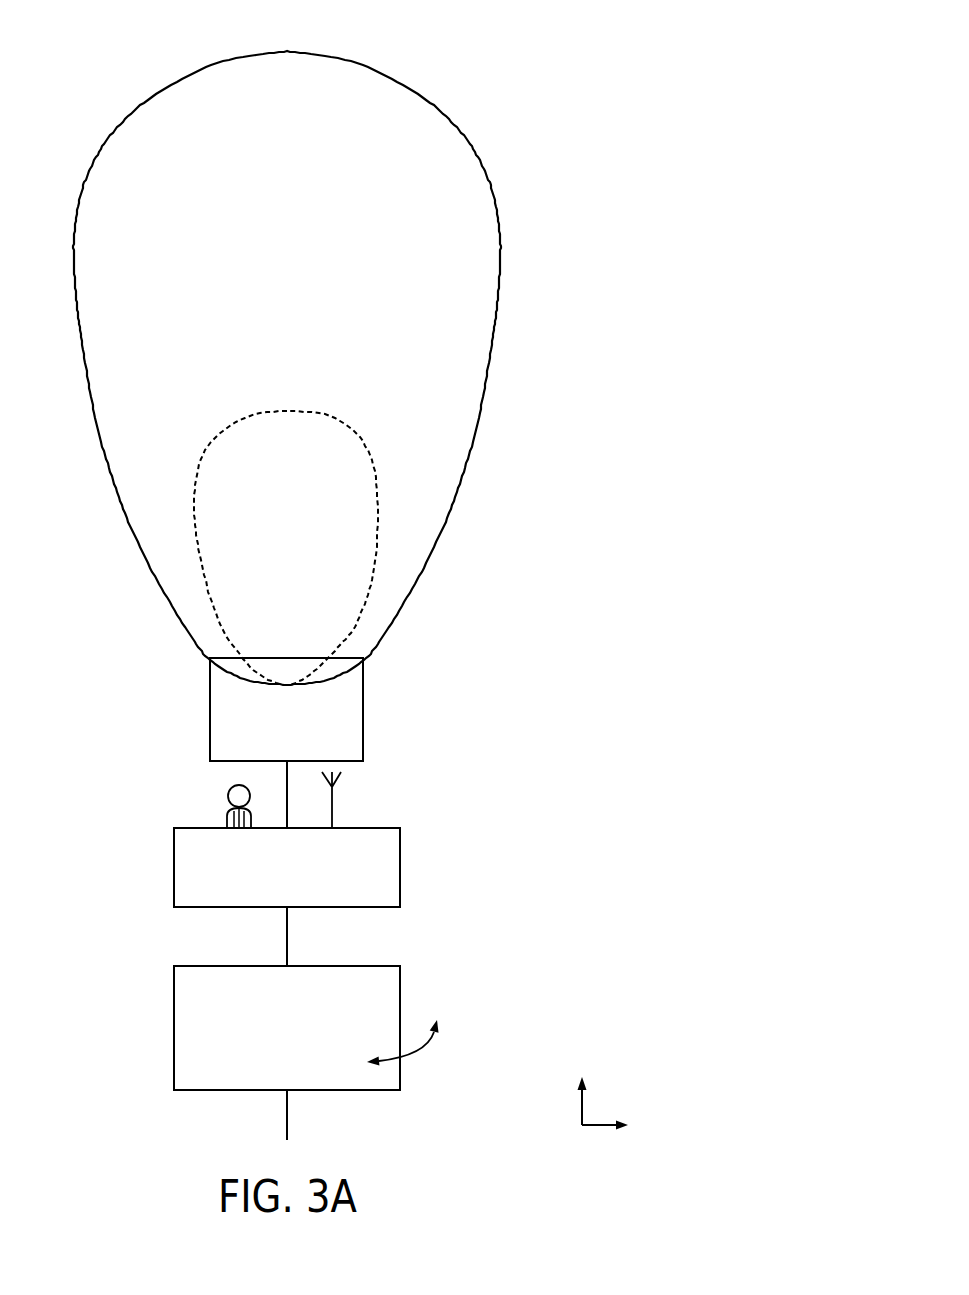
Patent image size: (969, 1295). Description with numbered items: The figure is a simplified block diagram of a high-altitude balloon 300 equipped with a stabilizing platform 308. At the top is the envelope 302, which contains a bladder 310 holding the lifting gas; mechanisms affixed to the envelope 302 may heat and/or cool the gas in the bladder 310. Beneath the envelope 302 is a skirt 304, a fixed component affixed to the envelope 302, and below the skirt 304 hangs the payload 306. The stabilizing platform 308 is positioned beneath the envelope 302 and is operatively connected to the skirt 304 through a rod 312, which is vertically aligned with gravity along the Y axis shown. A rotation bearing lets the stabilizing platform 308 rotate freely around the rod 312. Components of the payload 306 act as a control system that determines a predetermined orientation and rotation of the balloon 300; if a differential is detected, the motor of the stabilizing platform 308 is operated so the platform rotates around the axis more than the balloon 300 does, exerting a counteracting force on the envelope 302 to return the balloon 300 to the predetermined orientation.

The high-altitude balloon 300 is at (566, 78).
The envelope 302 is at (499, 263).
The skirt 304 is at (363, 718).
The payload 306 is at (400, 870).
The stabilizing platform 308 is at (400, 1002).
The bladder 310 is at (368, 453).
The rod 312 is at (287, 943).